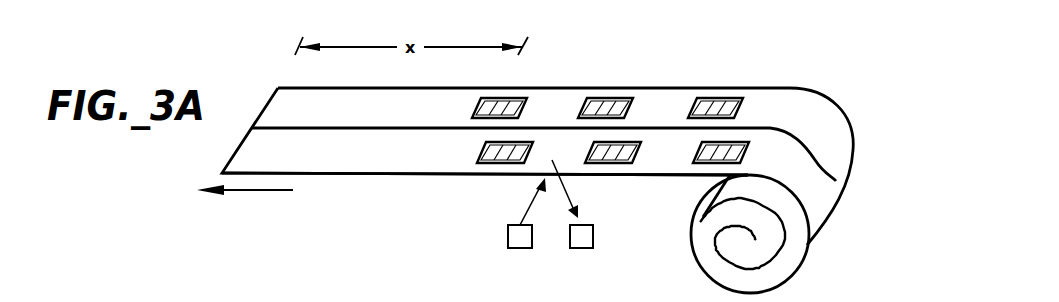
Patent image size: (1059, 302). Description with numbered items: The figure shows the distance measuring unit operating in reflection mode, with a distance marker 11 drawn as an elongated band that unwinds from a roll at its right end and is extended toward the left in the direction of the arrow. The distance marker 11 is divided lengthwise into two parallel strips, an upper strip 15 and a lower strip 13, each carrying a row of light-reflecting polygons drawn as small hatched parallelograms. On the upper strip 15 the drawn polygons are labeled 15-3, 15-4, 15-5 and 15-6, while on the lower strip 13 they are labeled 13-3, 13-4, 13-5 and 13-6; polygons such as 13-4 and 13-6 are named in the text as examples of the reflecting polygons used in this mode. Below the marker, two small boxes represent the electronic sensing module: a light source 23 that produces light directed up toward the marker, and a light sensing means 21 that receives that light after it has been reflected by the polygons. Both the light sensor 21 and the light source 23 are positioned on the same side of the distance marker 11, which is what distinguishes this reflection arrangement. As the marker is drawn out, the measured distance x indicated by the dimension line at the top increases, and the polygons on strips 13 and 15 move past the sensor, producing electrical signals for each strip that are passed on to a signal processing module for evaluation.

The distance marker 11 is at (330, 82).
The strip 13 is at (322, 160).
The strip 15 is at (387, 98).
The light-reflecting polygon 15-3 is at (490, 101).
The light-reflecting polygon 15-4 is at (550, 103).
The light-reflecting polygon 15-5 is at (621, 103).
The light-reflecting polygon 15-6 is at (680, 103).
The light-reflecting polygon 13-3 is at (513, 162).
The light-reflecting polygon 13-4 is at (551, 161).
The light-reflecting polygon 13-5 is at (627, 163).
The light-reflecting polygon 13-6 is at (660, 160).
The light sensing means 21 is at (584, 249).
The light source 23 is at (520, 249).